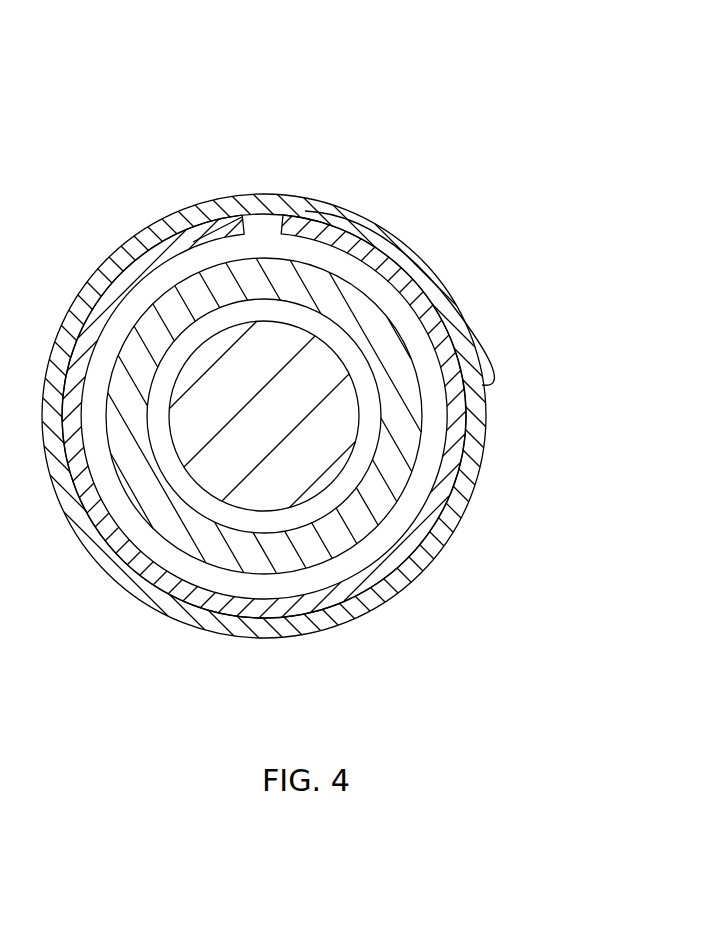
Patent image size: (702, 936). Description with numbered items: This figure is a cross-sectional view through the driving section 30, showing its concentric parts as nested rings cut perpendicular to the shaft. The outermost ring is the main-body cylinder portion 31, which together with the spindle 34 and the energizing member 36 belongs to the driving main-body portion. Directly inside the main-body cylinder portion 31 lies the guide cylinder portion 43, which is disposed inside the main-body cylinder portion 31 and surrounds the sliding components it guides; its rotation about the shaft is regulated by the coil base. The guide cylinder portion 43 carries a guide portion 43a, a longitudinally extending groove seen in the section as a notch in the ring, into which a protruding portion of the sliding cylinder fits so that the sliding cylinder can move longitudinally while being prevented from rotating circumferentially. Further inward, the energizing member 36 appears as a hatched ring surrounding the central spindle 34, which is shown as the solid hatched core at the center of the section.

The driving section 30 is at (272, 42).
The main-body cylinder portion 31 is at (423, 256).
The guide cylinder portion 43 is at (423, 310).
The guide portion 43a is at (270, 212).
The spindle 34 is at (338, 378).
The energizing member 36 is at (412, 440).